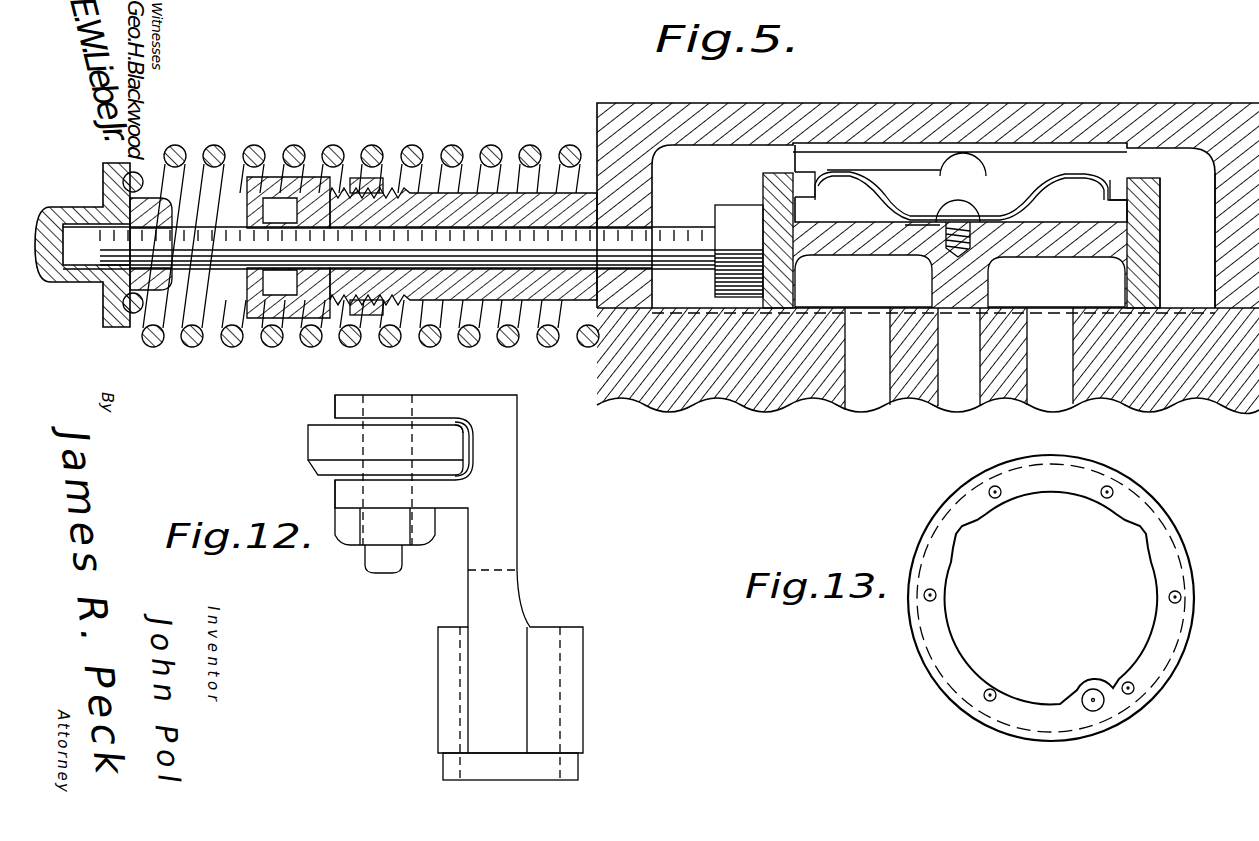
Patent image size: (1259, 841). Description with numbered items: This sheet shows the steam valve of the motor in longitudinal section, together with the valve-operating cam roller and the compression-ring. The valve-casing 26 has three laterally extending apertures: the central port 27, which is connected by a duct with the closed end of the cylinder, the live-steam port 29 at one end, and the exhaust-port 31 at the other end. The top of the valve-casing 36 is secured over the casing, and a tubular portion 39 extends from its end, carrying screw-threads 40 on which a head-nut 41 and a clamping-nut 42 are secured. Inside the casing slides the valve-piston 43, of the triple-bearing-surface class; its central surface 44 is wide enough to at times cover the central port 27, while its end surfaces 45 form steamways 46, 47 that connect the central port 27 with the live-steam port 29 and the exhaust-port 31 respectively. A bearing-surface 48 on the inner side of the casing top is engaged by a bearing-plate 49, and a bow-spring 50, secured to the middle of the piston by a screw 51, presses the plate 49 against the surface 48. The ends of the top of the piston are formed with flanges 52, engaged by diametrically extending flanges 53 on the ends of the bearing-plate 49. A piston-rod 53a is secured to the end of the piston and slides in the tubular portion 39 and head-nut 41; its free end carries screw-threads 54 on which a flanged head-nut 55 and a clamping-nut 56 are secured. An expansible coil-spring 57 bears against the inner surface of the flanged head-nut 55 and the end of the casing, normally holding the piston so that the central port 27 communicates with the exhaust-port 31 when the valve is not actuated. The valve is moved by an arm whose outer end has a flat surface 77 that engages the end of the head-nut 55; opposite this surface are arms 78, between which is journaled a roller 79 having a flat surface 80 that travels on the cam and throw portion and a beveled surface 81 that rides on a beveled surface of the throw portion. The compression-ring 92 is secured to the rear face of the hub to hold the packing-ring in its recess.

In FIG. 5, the valve-casing 26 is at (1203, 406).
In FIG. 5, the central port 27 is at (959, 357).
In FIG. 5, the live-steam port 29 is at (867, 359).
In FIG. 5, the exhaust-port 31 is at (1050, 356).
In FIG. 5, the top of the valve-casing 36 is at (1197, 110).
In FIG. 5, the tubular portion 39 is at (520, 192).
In FIG. 5, the screw-threads 40 is at (394, 192).
In FIG. 5, the head-nut 41 is at (306, 177).
In FIG. 5, the clamping-nut 42 is at (366, 316).
In FIG. 5, the valve-piston 43 is at (1162, 236).
In FIG. 5, the central surface 44 is at (990, 284).
In FIG. 5, the end surfaces 45 is at (797, 292).
In FIG. 5, the steamway 46 is at (863, 288).
In FIG. 5, the steamway 47 is at (1056, 282).
In FIG. 5, the bearing-surface 48 is at (972, 150).
In FIG. 5, the bearing-plate 49 is at (838, 150).
In FIG. 5, the bow-spring 50 is at (900, 212).
In FIG. 5, the screw 51 is at (970, 212).
In FIG. 5, the flanges 52 is at (765, 192).
In FIG. 5, the flanges 53 is at (800, 178).
In FIG. 5, the piston-rod 53a is at (401, 243).
In FIG. 5, the screw-threads 54 is at (413, 251).
In FIG. 5, the flanged head-nut 55 is at (137, 160).
In FIG. 5, the clamping-nut 56 is at (148, 295).
In FIG. 5, the expansible coil-spring 57 is at (273, 348).
In FIG. 12, the flat surface 77 is at (518, 472).
In FIG. 12, the arms 78 is at (335, 406).
In FIG. 12, the roller 79 is at (416, 450).
In FIG. 12, the flat surface 80 is at (308, 442).
In FIG. 12, the beveled surface 81 is at (310, 468).
In FIG. 13, the compression-ring 92 is at (1200, 594).